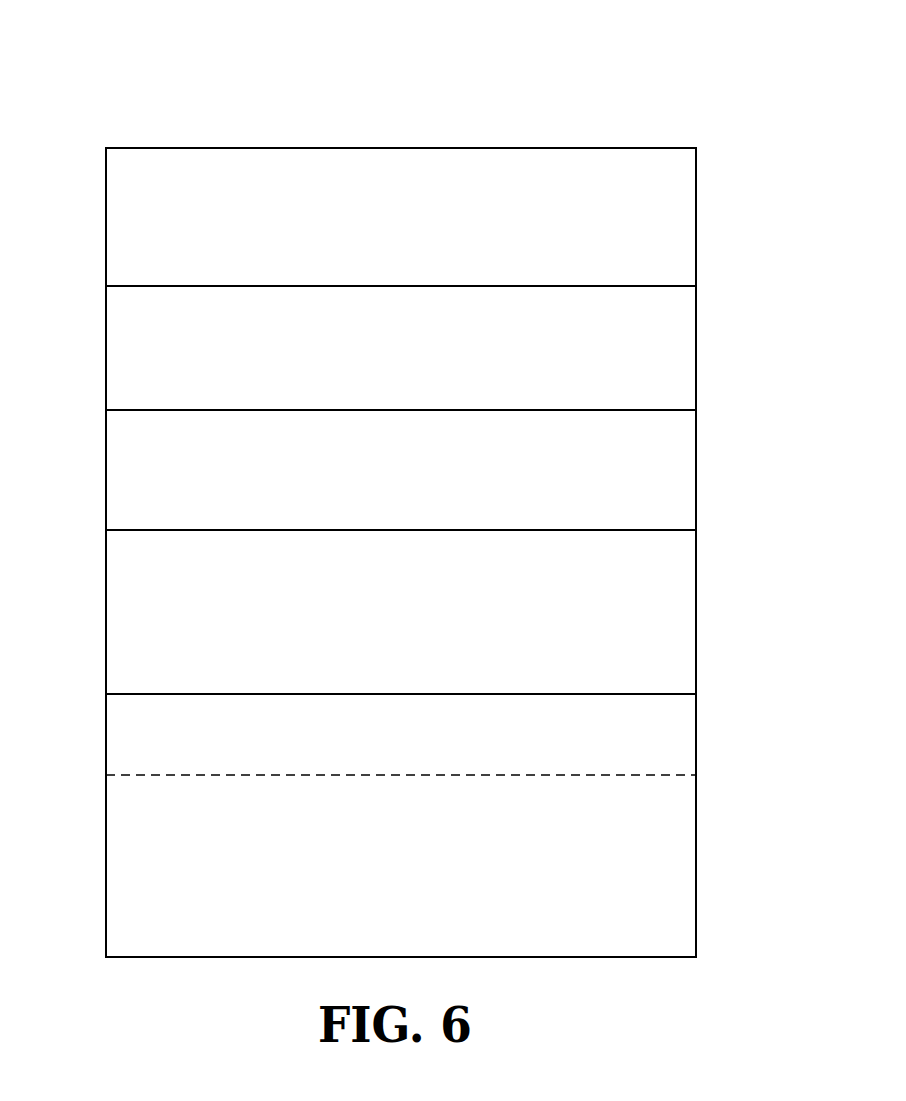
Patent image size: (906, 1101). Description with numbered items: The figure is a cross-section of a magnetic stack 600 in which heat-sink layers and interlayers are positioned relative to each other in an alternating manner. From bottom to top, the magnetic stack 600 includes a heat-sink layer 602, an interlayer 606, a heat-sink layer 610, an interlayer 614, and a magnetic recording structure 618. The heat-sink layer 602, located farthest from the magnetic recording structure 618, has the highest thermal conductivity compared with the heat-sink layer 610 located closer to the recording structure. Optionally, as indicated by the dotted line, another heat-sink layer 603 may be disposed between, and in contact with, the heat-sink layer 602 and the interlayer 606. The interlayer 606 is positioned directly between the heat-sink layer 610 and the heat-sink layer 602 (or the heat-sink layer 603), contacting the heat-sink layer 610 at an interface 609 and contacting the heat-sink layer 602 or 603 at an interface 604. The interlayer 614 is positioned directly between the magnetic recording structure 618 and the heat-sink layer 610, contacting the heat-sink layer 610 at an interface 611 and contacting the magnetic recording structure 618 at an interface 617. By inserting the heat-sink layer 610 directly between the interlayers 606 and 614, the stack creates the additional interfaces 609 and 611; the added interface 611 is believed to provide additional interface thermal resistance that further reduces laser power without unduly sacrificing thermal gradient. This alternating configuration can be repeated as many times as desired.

The magnetic stack 600 is at (712, 76).
The heat-sink layer 602 is at (697, 810).
The heat-sink layer 603 is at (155, 735).
The interface 604 is at (148, 689).
The interlayer 606 is at (697, 610).
The interface 609 is at (655, 525).
The heat-sink layer 610 is at (697, 446).
The interface 611 is at (655, 405).
The interlayer 614 is at (697, 326).
The interface 617 is at (655, 280).
The magnetic recording structure 618 is at (697, 199).